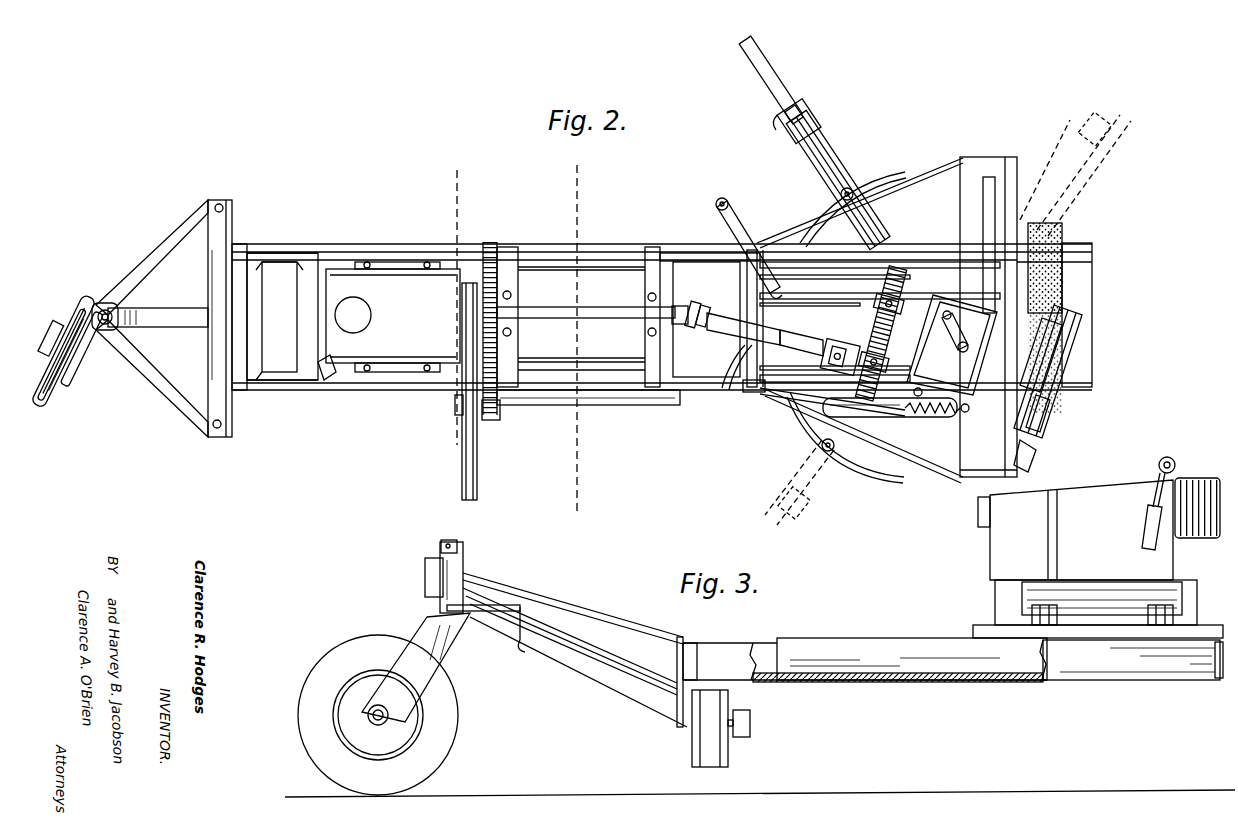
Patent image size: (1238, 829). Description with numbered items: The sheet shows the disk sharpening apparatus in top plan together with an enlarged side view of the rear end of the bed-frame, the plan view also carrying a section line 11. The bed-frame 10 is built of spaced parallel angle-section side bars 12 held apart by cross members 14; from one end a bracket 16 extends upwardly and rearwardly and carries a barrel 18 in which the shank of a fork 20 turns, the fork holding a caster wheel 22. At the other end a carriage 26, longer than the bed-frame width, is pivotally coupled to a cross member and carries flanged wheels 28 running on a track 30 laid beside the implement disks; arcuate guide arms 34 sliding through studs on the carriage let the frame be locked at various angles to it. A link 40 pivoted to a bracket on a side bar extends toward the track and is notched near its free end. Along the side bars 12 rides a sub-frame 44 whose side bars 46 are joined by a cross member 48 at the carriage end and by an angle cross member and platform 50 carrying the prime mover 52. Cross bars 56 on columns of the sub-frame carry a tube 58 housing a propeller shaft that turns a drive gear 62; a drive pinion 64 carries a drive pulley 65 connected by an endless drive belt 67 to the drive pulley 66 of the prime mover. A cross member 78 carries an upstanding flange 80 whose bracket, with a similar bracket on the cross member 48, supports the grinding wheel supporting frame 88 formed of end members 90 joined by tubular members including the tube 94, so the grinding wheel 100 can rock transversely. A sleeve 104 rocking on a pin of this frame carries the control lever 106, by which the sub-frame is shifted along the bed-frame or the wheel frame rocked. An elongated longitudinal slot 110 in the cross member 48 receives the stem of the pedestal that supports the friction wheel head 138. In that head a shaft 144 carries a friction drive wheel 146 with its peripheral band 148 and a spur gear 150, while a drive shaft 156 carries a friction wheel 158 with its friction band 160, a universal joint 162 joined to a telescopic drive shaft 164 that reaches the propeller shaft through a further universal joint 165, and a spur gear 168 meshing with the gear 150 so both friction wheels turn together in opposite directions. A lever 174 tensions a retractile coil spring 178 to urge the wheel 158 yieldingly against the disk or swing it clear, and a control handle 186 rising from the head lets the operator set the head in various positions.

In FIG. 2, the bed-frame 10 is at (472, 182).
In FIG. 3, the bed-frame 10 is at (1088, 672).
In FIG. 2, the section line 11 is at (557, 182).
In FIG. 2, the side bars 12 is at (236, 246).
In FIG. 3, the side bars 12 is at (890, 682).
In FIG. 2, the cross members 14 is at (208, 285).
In FIG. 2, the bracket 16 is at (142, 262).
In FIG. 3, the bracket 16 is at (582, 625).
In FIG. 2, the barrel 18 is at (132, 327).
In FIG. 3, the barrel 18 is at (463, 565).
In FIG. 2, the fork 20 is at (96, 368).
In FIG. 3, the fork 20 is at (416, 669).
In FIG. 2, the caster wheel 22 is at (62, 408).
In FIG. 3, the caster wheel 22 is at (452, 718).
In FIG. 2, the carriage 26 is at (818, 478).
In FIG. 2, the flanged wheels 28 is at (805, 105).
In FIG. 2, the track 30 is at (884, 230).
In FIG. 2, the arcuate guide arms 34 is at (870, 180).
In FIG. 2, the link 40 is at (710, 248).
In FIG. 2, the sub-frame 44 is at (530, 246).
In FIG. 3, the sub-frame 44 is at (952, 623).
In FIG. 3, the side bars 46 is at (825, 645).
In FIG. 2, the cross member 48 is at (1010, 178).
In FIG. 3, the angle cross member and platform 50 is at (1200, 625).
In FIG. 2, the prime mover 52 is at (394, 270).
In FIG. 3, the prime mover 52 is at (1100, 495).
In FIG. 2, the cross bars 56 is at (510, 372).
In FIG. 2, the tube 58 is at (565, 306).
In FIG. 2, the drive gear 62 is at (490, 245).
In FIG. 2, the drive pinion 64 is at (500, 408).
In FIG. 2, the drive pulley 65 is at (462, 440).
In FIG. 2, the drive pulley 66 is at (500, 290).
In FIG. 2, the endless drive belt 67 is at (457, 380).
In FIG. 2, the cross member 78 is at (752, 395).
In FIG. 2, the upstanding flange 80 is at (735, 358).
In FIG. 2, the grinding wheel supporting frame 88 is at (866, 293).
In FIG. 2, the end members 90 is at (748, 290).
In FIG. 2, the tubular member 94 is at (832, 288).
In FIG. 2, the grinding wheel 100 is at (1050, 236).
In FIG. 2, the sleeve 104 is at (805, 300).
In FIG. 2, the control lever 106 is at (733, 210).
In FIG. 2, the elongated longitudinal slot 110 is at (989, 177).
In FIG. 2, the friction wheel carrying head 138 is at (947, 300).
In FIG. 2, the shaft 144 is at (880, 265).
In FIG. 2, the friction drive wheel 146 is at (1068, 352).
In FIG. 2, the peripheral band 148 is at (1065, 306).
In FIG. 2, the spur gear 150 is at (904, 270).
In FIG. 2, the drive shaft 156 is at (858, 336).
In FIG. 2, the friction wheel 158 is at (1050, 408).
In FIG. 2, the friction band 160 is at (1040, 432).
In FIG. 2, the universal joint 162 is at (820, 342).
In FIG. 2, the telescopic drive shaft 164 is at (790, 340).
In FIG. 2, the universal joint 165 is at (688, 310).
In FIG. 2, the spur gear 168 is at (885, 352).
In FIG. 2, the lever 174 is at (880, 412).
In FIG. 2, the retractile coil spring 178 is at (945, 418).
In FIG. 2, the control handle 186 is at (945, 350).